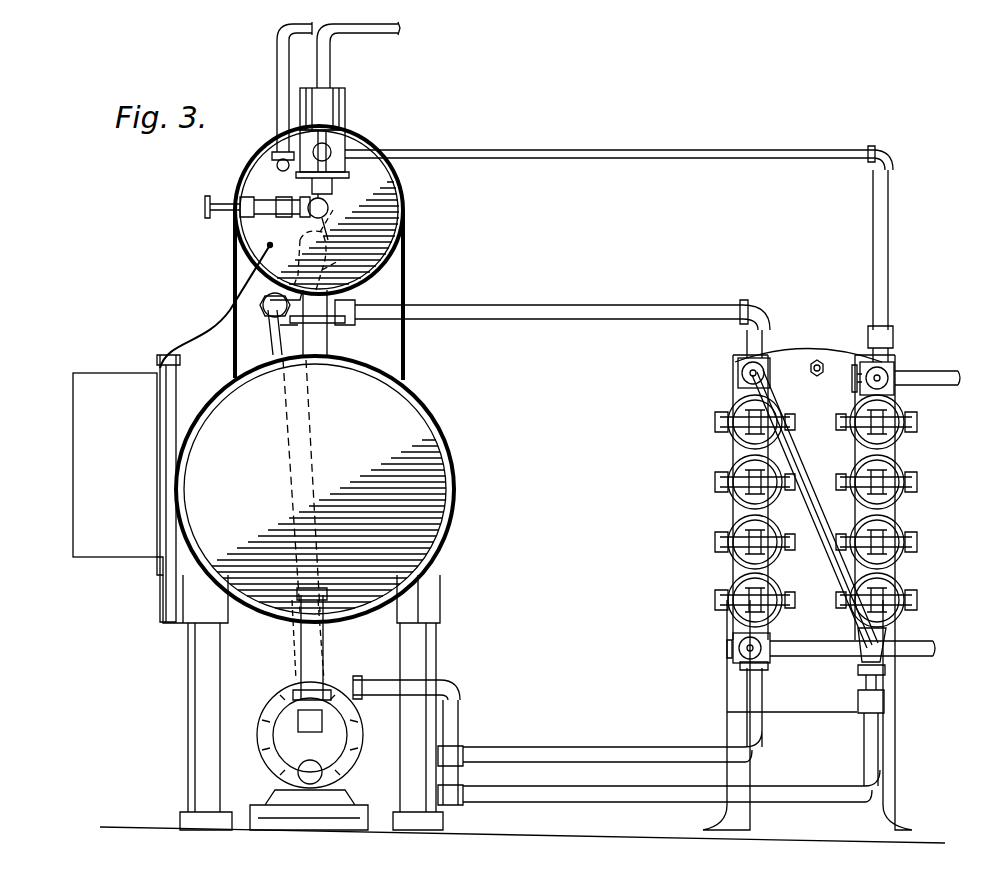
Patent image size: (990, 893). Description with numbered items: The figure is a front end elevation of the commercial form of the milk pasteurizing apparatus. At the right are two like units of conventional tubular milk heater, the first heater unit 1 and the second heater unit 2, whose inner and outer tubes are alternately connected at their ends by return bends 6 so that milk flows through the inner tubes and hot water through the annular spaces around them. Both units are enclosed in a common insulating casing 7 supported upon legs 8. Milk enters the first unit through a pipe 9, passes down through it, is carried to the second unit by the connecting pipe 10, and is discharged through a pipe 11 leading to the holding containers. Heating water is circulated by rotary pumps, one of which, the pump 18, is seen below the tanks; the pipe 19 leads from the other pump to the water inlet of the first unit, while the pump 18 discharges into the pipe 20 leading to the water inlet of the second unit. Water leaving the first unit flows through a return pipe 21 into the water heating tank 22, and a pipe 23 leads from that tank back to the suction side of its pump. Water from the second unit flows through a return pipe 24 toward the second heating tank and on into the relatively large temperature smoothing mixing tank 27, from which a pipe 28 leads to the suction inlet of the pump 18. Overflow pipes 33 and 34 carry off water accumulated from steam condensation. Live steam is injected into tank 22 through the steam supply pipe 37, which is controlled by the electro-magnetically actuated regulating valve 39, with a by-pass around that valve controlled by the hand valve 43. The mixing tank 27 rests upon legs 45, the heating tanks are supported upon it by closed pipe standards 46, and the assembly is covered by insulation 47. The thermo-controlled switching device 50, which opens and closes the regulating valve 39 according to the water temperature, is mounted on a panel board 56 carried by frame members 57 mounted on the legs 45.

The first heater unit 1 is at (919, 455).
The second heater unit 2 is at (712, 451).
The return bends 6 is at (730, 410).
The insulating casing 7 is at (832, 350).
The legs 8 is at (896, 770).
The pipe 9 is at (948, 376).
The connecting pipe 10 is at (790, 452).
The pipe 11 is at (930, 640).
The rotary pump 18 is at (272, 712).
The pipe 19 is at (601, 797).
The pipe 20 is at (622, 755).
The return pipe 21 is at (845, 153).
The water heating tank 22 is at (410, 204).
The pipe 23 is at (262, 302).
The return pipe 24 is at (648, 297).
The mixing tank 27 is at (444, 440).
The pipe 28 is at (324, 642).
The overflow pipe 33 is at (277, 73).
The overflow pipe 34 is at (332, 62).
The steam supply pipe 37 is at (326, 216).
The regulating valve 39 is at (300, 176).
The hand valve 43 is at (236, 197).
The legs 45 is at (193, 692).
The closed pipe standards 46 is at (331, 337).
The insulation 47 is at (407, 276).
The thermo-controlled electric switching device 50 is at (75, 455).
The panel board 56 is at (160, 442).
The frame members 57 is at (154, 363).